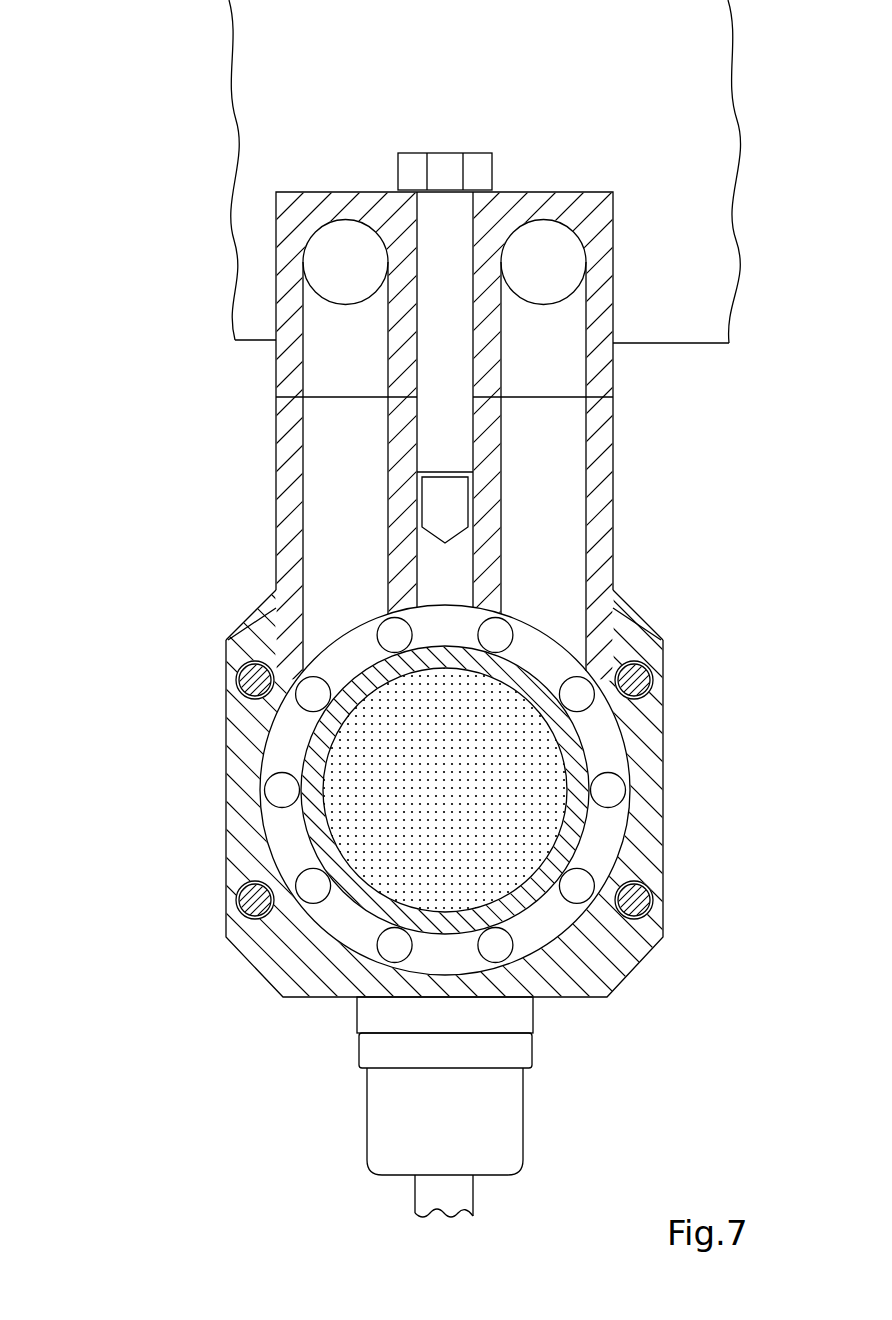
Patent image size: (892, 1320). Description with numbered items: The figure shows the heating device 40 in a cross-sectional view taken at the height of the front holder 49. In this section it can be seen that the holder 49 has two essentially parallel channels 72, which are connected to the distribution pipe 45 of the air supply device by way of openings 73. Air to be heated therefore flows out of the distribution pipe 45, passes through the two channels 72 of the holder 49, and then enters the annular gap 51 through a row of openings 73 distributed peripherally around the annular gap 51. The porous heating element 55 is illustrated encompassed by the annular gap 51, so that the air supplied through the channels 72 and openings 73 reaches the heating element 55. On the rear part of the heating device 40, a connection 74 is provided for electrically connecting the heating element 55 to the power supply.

The heating device 40 is at (128, 809).
The distribution pipe 45 is at (695, 117).
The front holder 49 is at (598, 502).
The annular gap 51 is at (284, 847).
The porous heating element 55 is at (375, 763).
The channels 72 is at (537, 590).
The openings 73 is at (543, 252).
The connection 74 is at (392, 1087).